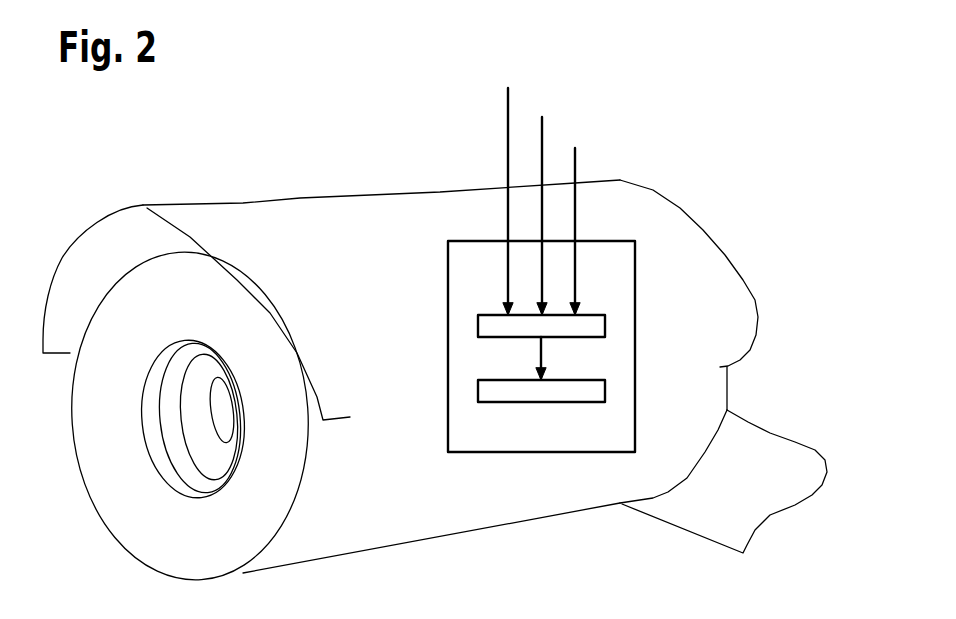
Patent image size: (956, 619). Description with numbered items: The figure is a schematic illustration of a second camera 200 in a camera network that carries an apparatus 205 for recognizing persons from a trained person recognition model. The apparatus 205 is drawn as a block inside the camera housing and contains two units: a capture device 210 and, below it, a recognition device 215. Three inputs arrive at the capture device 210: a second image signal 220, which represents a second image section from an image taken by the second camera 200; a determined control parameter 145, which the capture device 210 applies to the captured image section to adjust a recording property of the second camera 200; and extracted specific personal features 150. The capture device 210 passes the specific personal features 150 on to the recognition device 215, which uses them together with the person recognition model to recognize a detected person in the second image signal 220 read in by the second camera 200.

The second camera 200 is at (243, 217).
The apparatus for recognizing persons 205 is at (470, 241).
The capture device 210 is at (478, 325).
The recognition device 215 is at (478, 390).
The second image signal 220 is at (508, 100).
The determined control parameter 145 is at (542, 128).
The specific personal features 150 is at (575, 157).